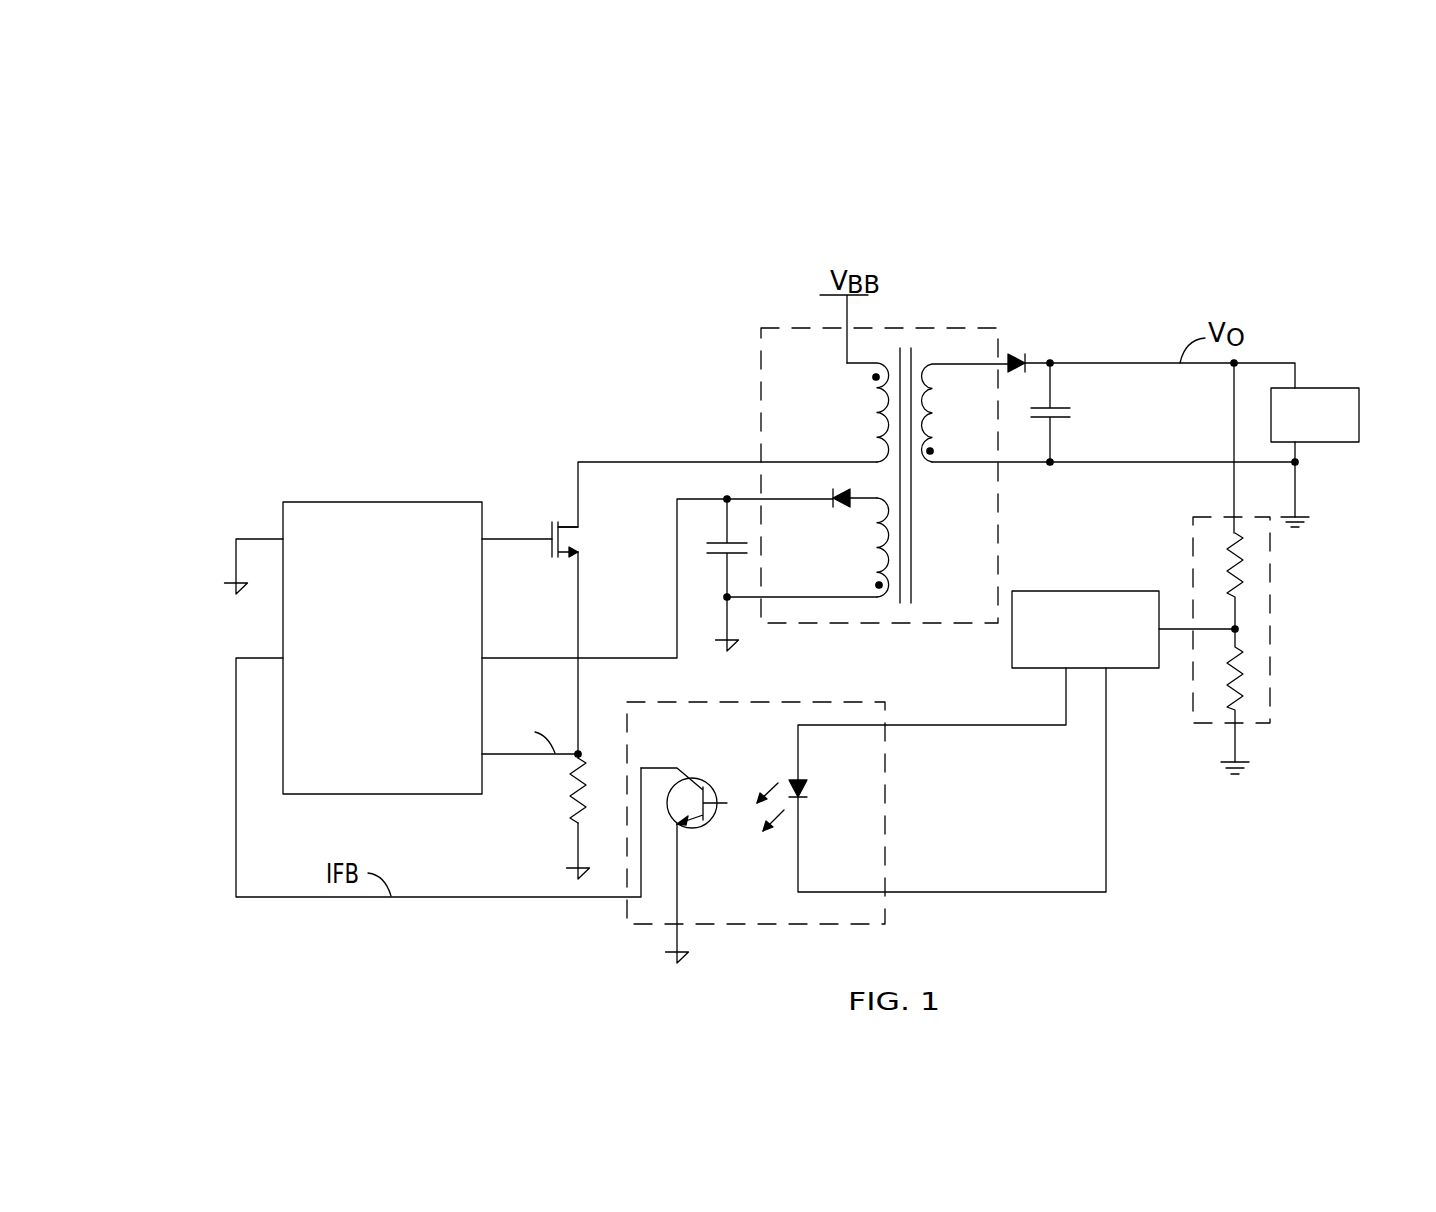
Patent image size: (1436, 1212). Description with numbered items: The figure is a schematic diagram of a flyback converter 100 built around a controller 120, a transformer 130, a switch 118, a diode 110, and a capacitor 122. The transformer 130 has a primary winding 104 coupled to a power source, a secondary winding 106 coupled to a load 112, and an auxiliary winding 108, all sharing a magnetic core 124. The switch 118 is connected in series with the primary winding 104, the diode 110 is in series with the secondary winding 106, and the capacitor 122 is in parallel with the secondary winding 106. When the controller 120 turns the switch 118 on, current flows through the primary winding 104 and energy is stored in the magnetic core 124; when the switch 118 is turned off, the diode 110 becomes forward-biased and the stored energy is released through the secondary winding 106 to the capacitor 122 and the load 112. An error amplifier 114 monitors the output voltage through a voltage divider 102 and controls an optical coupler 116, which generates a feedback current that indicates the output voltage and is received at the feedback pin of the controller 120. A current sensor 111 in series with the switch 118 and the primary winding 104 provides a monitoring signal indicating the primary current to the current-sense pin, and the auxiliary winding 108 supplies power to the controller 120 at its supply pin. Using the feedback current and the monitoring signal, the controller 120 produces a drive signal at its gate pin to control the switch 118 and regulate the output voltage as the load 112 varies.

The flyback converter 100 is at (322, 214).
The voltage divider 102 is at (1270, 625).
The primary winding 104 is at (876, 436).
The secondary winding 106 is at (938, 388).
The auxiliary winding 108 is at (876, 576).
The diode 110 is at (1024, 363).
The current sensor 111 is at (572, 800).
The load 112 is at (1335, 388).
The error amplifier 114 is at (1078, 591).
The optical coupler 116 is at (795, 700).
The switch 118 is at (547, 548).
The controller 120 is at (382, 500).
The capacitor 122 is at (1057, 410).
The magnetic core 124 is at (912, 565).
The transformer 130 is at (907, 328).